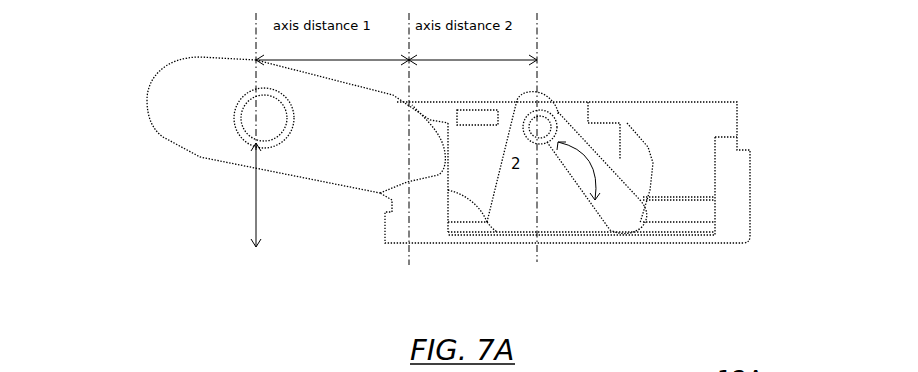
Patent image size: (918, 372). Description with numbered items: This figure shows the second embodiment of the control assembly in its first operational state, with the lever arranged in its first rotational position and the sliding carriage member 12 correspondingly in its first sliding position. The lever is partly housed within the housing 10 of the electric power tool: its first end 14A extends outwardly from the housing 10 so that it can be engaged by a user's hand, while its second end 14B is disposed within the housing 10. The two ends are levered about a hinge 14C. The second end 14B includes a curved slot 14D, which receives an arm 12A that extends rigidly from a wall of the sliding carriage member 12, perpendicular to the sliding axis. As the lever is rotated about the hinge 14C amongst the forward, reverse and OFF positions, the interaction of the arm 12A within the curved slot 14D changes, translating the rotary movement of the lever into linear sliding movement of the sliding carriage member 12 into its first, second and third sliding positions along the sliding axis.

The housing 10 is at (750, 192).
The sliding carriage member 12 is at (613, 118).
The arm 12A is at (547, 125).
The first end 14A is at (200, 157).
The second end 14B is at (535, 232).
The hinge 14C is at (440, 157).
The curved slot 14D is at (613, 203).